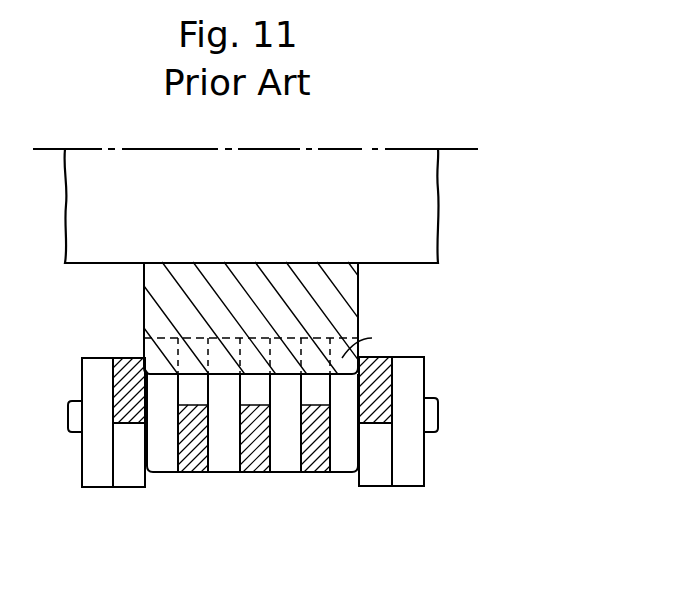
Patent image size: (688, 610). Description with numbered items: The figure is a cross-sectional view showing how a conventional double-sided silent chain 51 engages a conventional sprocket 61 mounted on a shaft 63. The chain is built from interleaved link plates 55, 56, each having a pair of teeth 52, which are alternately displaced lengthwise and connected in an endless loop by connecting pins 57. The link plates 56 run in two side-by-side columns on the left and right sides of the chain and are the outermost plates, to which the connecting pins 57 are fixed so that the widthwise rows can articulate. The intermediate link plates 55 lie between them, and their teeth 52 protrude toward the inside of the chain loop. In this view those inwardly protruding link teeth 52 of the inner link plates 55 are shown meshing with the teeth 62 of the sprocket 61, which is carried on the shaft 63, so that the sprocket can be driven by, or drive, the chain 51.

The double-sided silent chain 51 is at (263, 512).
The teeth 52 is at (372, 338).
The link plates 55 is at (193, 480).
The link plates 56 is at (130, 482).
The connecting pins 57 is at (438, 415).
The sprocket 61 is at (335, 311).
The teeth 62 is at (162, 360).
The shaft 63 is at (422, 213).